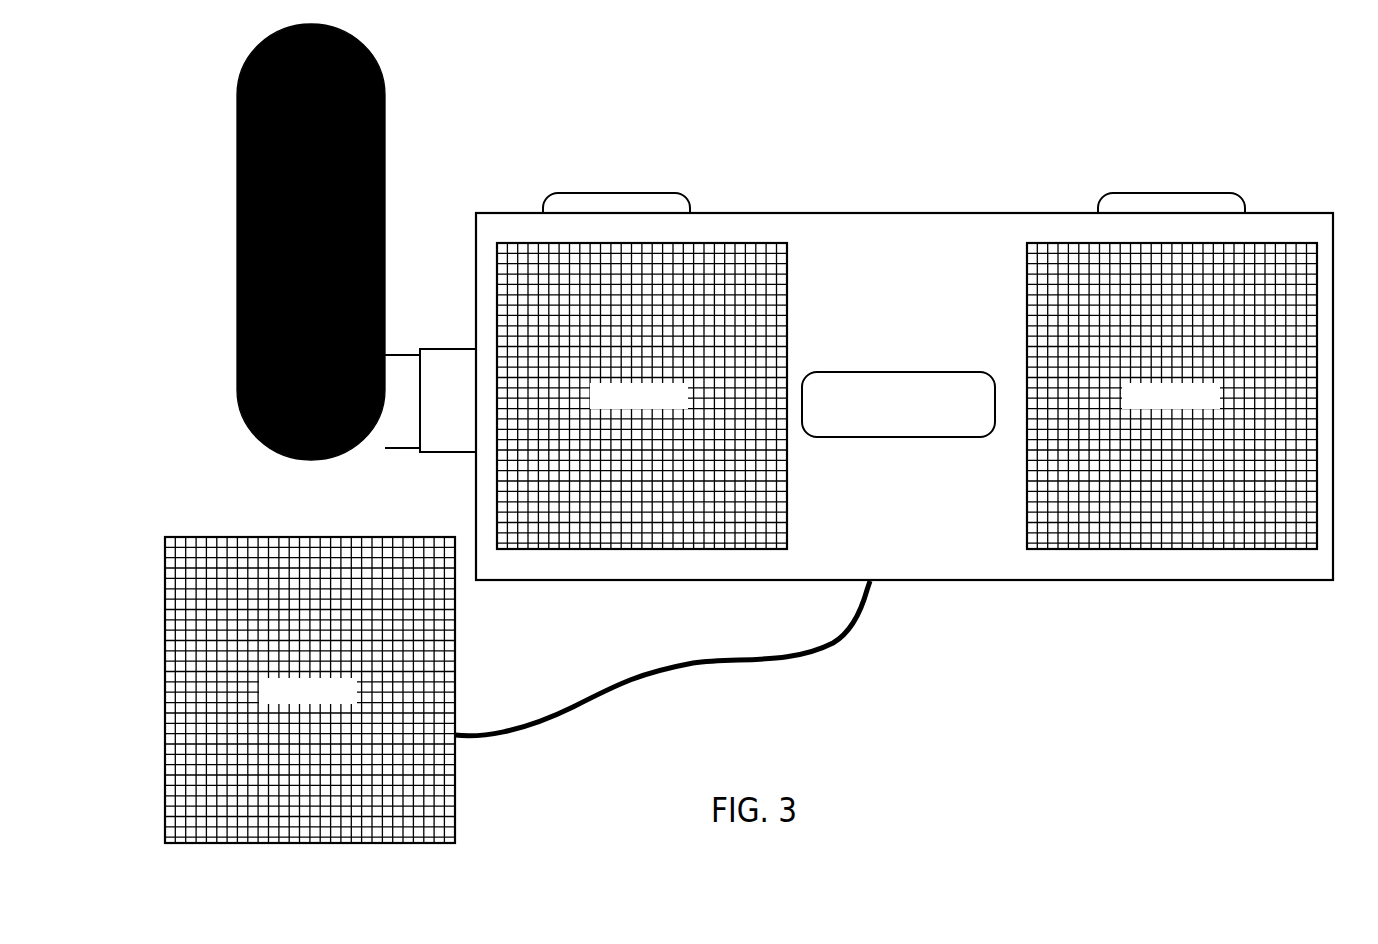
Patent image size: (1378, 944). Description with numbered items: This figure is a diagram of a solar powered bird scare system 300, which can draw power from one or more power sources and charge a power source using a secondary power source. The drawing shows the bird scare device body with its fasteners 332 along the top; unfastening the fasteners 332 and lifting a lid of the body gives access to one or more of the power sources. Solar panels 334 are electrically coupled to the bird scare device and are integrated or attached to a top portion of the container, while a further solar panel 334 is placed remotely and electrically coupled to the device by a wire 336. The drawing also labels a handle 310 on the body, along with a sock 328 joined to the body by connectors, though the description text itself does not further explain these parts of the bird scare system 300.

The solar powered bird scare system 300 is at (759, 433).
The handle 310 is at (868, 437).
The sock 328 is at (385, 170).
The fasteners 332 is at (690, 196).
The solar panels 334 is at (787, 313).
The wire 336 is at (857, 630).